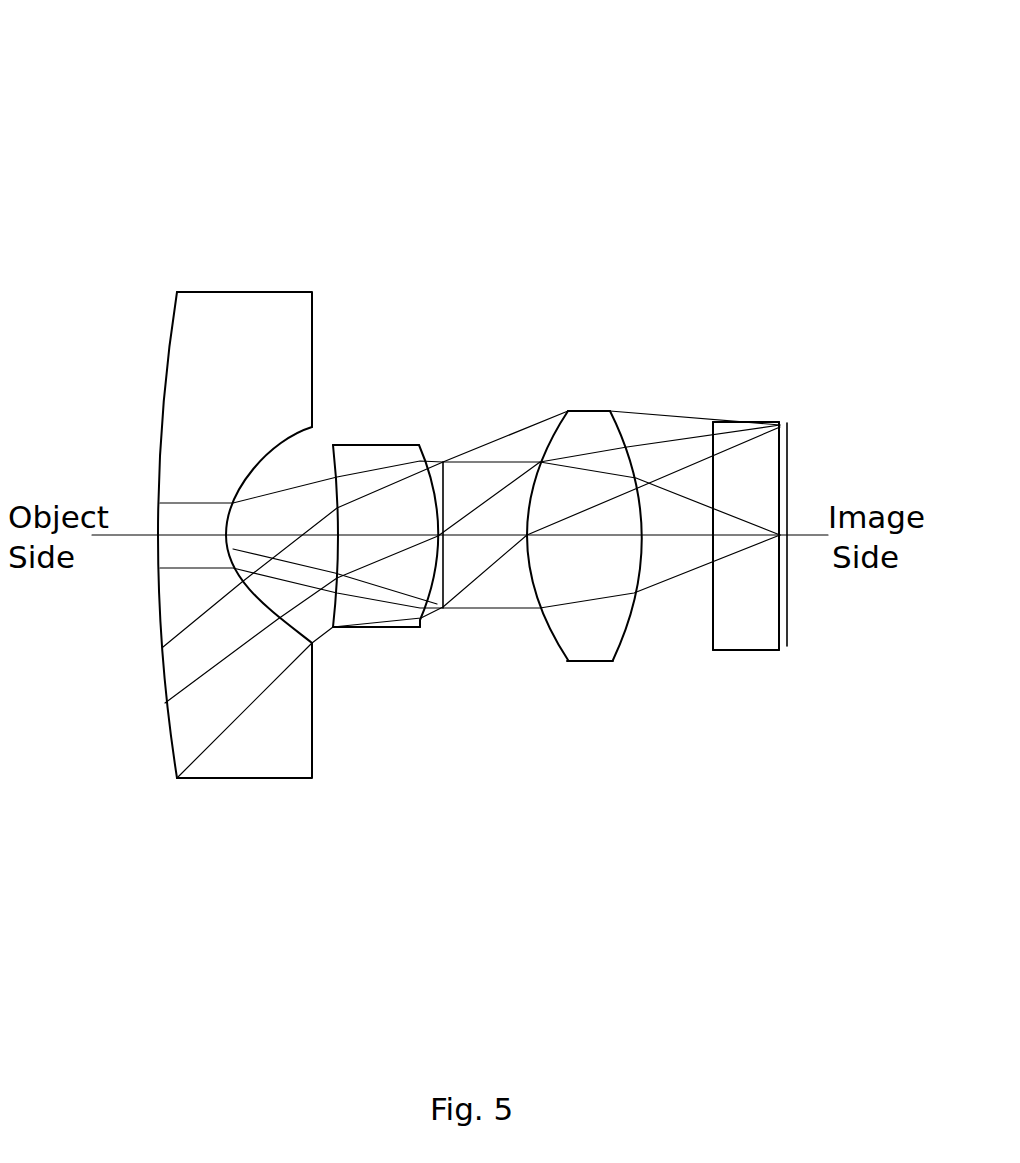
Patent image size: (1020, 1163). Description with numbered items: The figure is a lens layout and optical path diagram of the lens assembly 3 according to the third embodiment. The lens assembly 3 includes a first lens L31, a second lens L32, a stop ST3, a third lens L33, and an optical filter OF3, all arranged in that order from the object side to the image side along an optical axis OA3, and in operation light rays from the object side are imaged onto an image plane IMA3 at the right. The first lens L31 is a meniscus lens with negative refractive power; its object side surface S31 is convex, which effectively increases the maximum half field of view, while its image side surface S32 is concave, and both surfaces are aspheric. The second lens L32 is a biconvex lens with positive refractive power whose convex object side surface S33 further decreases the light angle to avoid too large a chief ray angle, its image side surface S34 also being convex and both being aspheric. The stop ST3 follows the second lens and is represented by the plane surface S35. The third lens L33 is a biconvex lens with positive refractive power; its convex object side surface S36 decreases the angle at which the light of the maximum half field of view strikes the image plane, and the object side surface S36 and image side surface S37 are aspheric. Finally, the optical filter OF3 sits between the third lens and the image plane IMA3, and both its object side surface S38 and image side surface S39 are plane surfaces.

The lens assembly 3 is at (62, 28).
The first lens L31 is at (192, 524).
The second lens L32 is at (397, 520).
The third lens L33 is at (603, 488).
The stop ST3 is at (489, 469).
The optical filter OF3 is at (734, 514).
The image plane IMA3 is at (787, 422).
The optical axis OA3 is at (116, 537).
The object side surface of the first lens S31 is at (163, 647).
The image side surface of the first lens S32 is at (258, 600).
The object side surface of the second lens S33 is at (339, 588).
The image side surface of the second lens S34 is at (421, 618).
The stop surface S35 is at (444, 610).
The object side surface of the third lens S36 is at (549, 628).
The image side surface of the third lens S37 is at (632, 605).
The object side surface of the optical filter S38 is at (713, 610).
The image side surface of the optical filter S39 is at (780, 612).